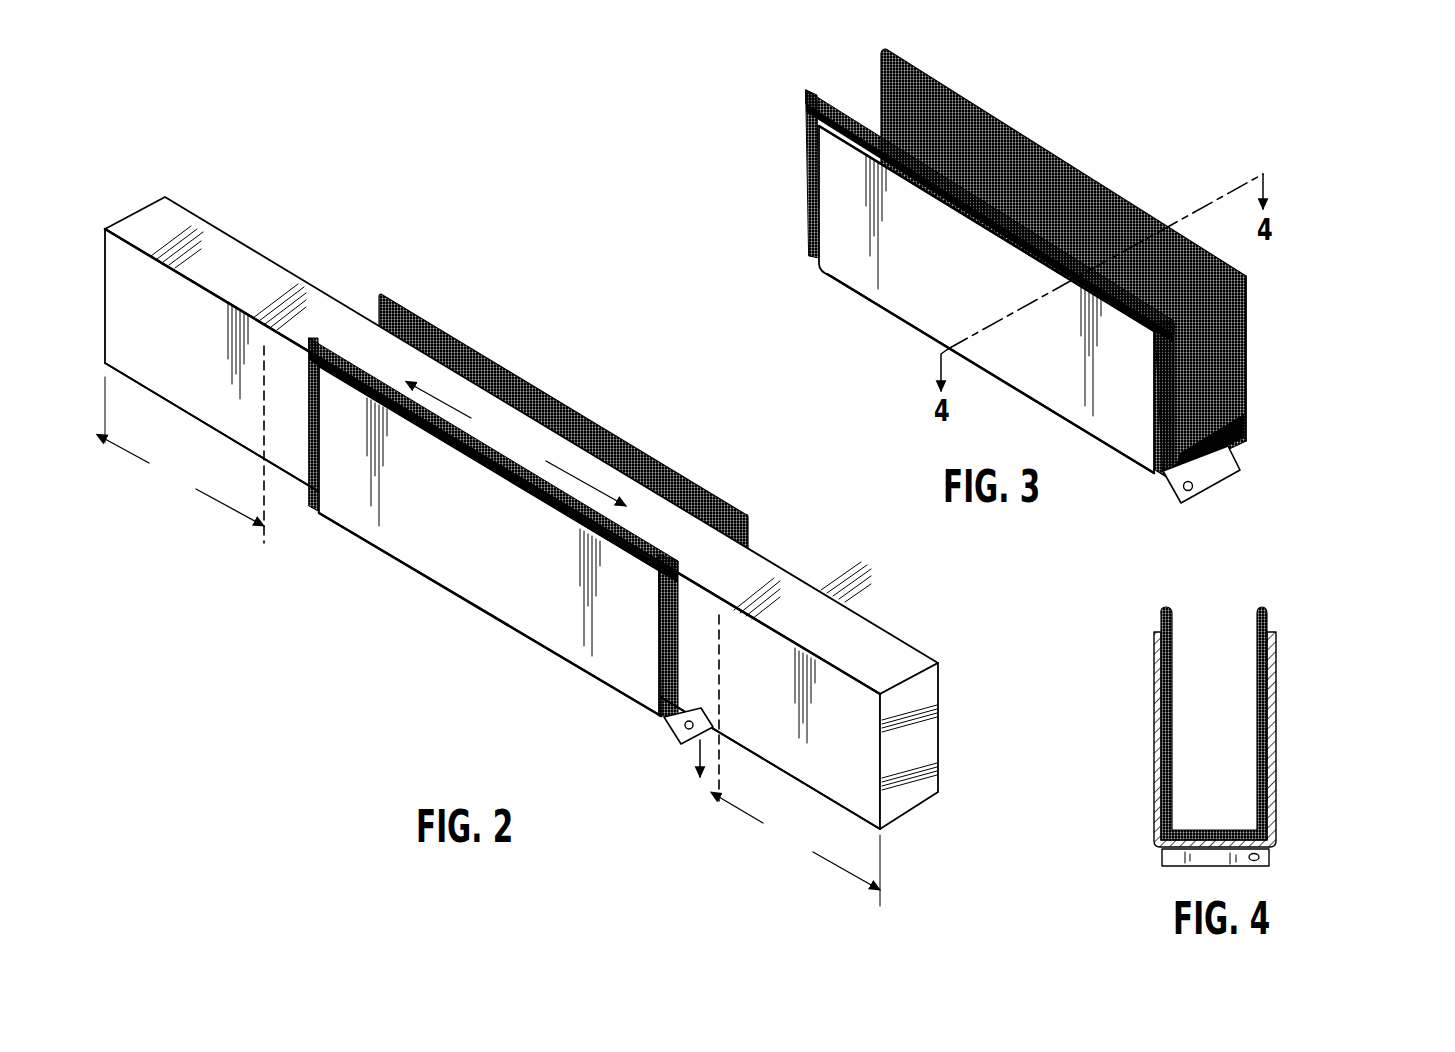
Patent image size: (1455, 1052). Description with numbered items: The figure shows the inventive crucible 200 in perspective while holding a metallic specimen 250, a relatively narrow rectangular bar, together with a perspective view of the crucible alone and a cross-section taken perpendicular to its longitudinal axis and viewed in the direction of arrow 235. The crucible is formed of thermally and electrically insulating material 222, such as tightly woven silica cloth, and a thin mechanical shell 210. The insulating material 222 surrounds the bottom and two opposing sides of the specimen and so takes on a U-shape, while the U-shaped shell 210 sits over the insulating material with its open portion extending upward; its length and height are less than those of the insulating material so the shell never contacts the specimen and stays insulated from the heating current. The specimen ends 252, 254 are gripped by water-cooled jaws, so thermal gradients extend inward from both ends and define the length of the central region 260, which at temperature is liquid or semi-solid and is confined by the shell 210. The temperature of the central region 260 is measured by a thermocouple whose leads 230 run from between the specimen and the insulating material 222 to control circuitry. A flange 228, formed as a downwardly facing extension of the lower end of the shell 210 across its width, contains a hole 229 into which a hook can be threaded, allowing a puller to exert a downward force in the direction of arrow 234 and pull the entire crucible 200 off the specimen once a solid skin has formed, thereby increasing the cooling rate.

In FIG. 2, the crucible 200 is at (715, 463).
In FIG. 3, the crucible 200 is at (1081, 132).
In FIG. 4, the crucible 200 is at (1345, 675).
In FIG. 2, the shell 210 is at (480, 591).
In FIG. 3, the shell 210 is at (997, 293).
In FIG. 4, the shell 210 is at (1271, 722).
In FIG. 2, the insulating material 222 is at (646, 665).
In FIG. 3, the insulating material 222 is at (1238, 290).
In FIG. 4, the insulating material 222 is at (1262, 613).
In FIG. 2, the flange 228 is at (666, 728).
In FIG. 3, the flange 228 is at (1225, 459).
In FIG. 4, the flange 228 is at (1215, 857).
In FIG. 2, the hole 229 is at (681, 731).
In FIG. 3, the hole 229 is at (1187, 480).
In FIG. 4, the hole 229 is at (1254, 857).
In FIG. 2, the leads 230 is at (556, 401).
In FIG. 3, the leads 230 is at (1063, 263).
In FIG. 2, the arrow 234 is at (696, 744).
In FIG. 3, the arrow 235 is at (1260, 361).
In FIG. 2, the metallic specimen 250 is at (898, 788).
In FIG. 2, the specimen end 252 is at (184, 451).
In FIG. 2, the specimen end 254 is at (799, 851).
In FIG. 2, the central region 260 is at (520, 446).